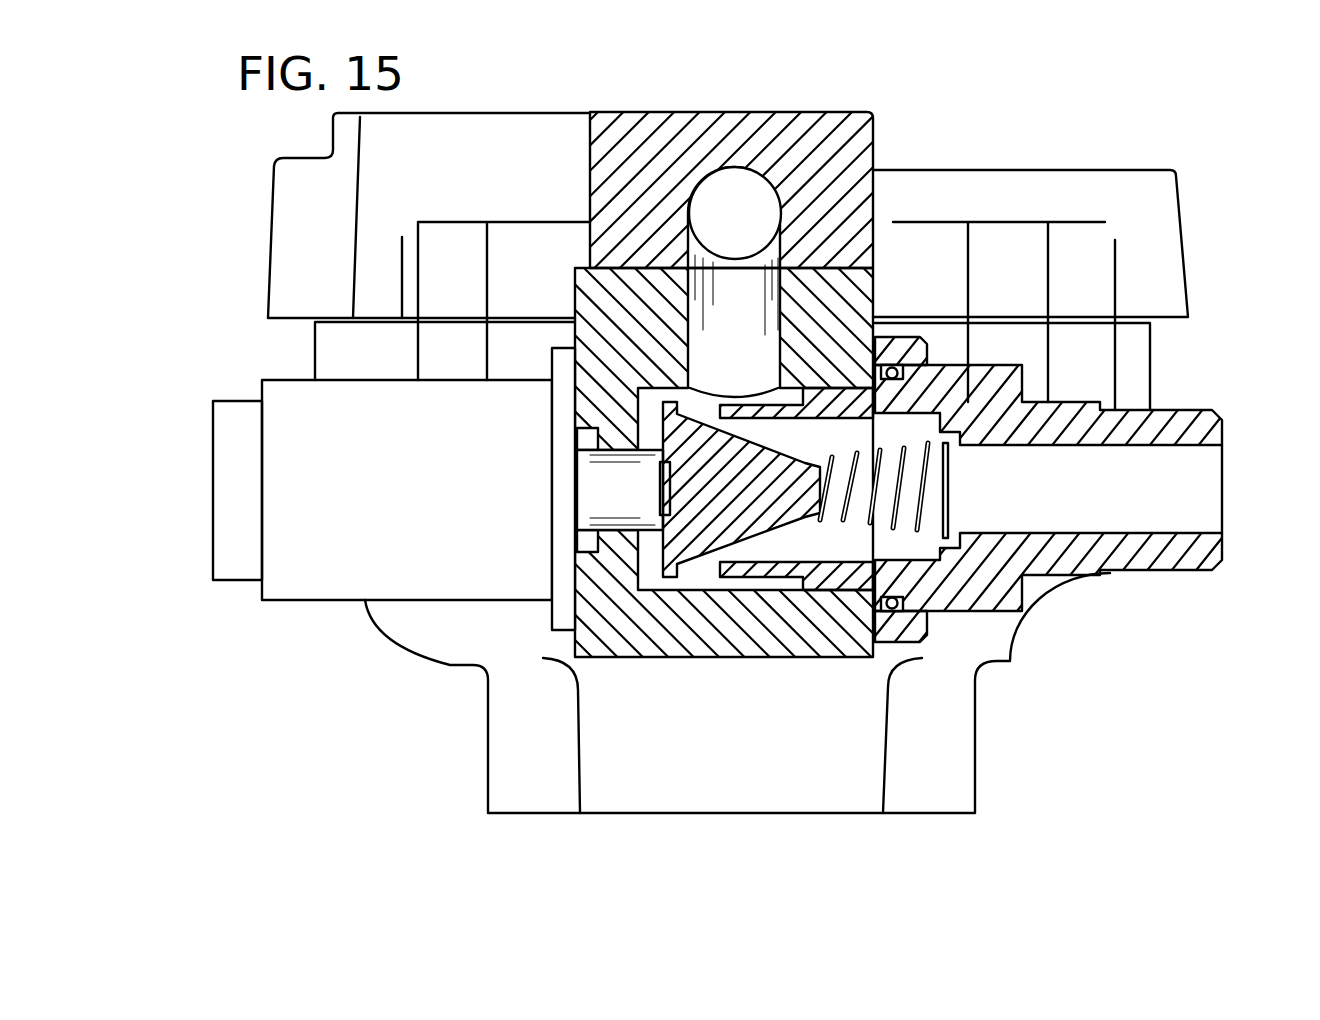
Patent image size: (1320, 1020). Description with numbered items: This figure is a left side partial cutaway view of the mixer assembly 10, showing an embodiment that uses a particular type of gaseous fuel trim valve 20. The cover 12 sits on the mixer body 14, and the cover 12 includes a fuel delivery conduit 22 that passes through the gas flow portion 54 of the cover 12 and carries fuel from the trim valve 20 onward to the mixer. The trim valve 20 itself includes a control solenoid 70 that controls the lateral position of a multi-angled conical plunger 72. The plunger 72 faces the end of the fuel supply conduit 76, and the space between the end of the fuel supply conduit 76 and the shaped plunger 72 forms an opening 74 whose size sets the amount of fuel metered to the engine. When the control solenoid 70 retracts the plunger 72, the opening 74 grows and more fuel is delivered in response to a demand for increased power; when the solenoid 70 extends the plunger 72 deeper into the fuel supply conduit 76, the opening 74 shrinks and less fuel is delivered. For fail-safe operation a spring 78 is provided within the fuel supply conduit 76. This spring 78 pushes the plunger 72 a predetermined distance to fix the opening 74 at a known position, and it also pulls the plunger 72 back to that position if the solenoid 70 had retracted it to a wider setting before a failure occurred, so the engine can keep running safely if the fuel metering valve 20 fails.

The mixer assembly 10 is at (208, 147).
The cover 12 is at (1150, 170).
The mixer body 14 is at (1065, 640).
The fuel control trim valve 20 is at (555, 685).
The fuel delivery conduit 22 is at (733, 177).
The gas flow portion 54 is at (853, 120).
The control solenoid 70 is at (320, 590).
The multi-angled conical plunger 72 is at (698, 533).
The opening 74 is at (717, 418).
The fuel supply conduit 76 is at (1203, 397).
The spring 78 is at (863, 527).